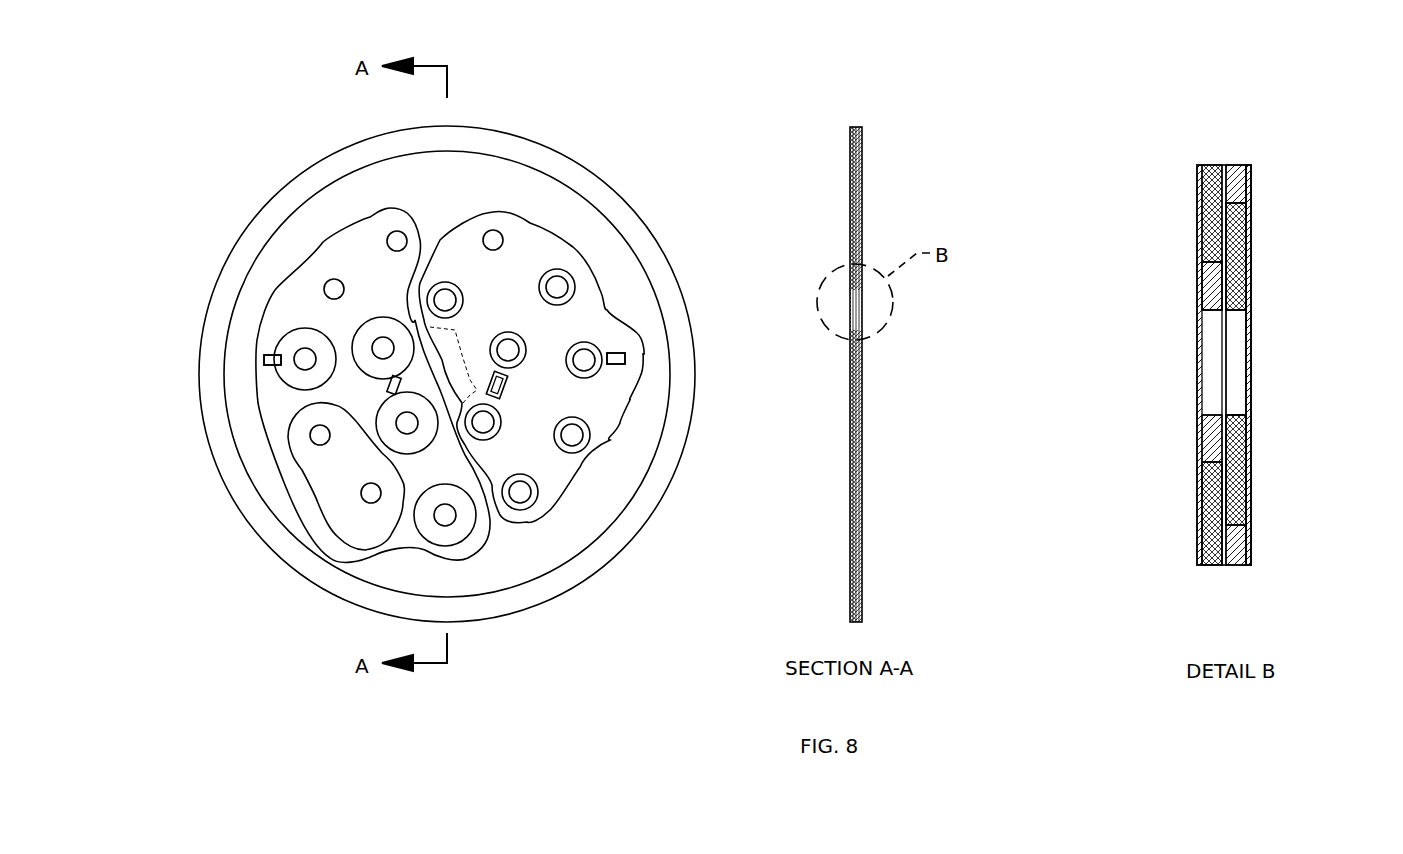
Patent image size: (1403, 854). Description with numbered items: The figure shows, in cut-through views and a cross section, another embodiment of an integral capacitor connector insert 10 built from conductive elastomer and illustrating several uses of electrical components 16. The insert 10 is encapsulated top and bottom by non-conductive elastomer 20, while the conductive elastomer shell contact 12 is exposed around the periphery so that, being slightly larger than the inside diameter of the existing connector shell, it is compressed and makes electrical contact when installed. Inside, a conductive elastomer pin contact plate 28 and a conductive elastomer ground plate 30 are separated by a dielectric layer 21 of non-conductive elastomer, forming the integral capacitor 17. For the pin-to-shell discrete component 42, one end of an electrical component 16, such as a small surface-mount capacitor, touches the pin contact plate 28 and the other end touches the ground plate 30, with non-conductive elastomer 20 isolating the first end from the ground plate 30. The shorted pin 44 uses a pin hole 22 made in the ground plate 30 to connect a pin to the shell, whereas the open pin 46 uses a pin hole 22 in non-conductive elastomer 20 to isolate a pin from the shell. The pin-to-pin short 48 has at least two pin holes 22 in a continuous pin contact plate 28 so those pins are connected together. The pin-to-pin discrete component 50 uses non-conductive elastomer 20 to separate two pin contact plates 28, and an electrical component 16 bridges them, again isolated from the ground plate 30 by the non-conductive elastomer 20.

The connector insert 10 is at (475, 123).
The conductive elastomer shell contact 12 is at (349, 161).
The electrical component 16 is at (256, 343).
The integral capacitor 17 is at (457, 268).
The non-conductive elastomer 20 is at (355, 258).
The dielectric layer 21 is at (456, 353).
The pin hole 22 is at (537, 508).
The conductive elastomer pin contact plate 28 is at (386, 380).
The conductive elastomer ground plate 30 is at (568, 258).
The pin-to-shell discrete component 42 is at (258, 372).
The shorted pin 44 is at (508, 222).
The open pin 46 is at (583, 272).
The pin-to-pin short 48 is at (330, 464).
The pin-to-pin discrete component 50 is at (382, 390).